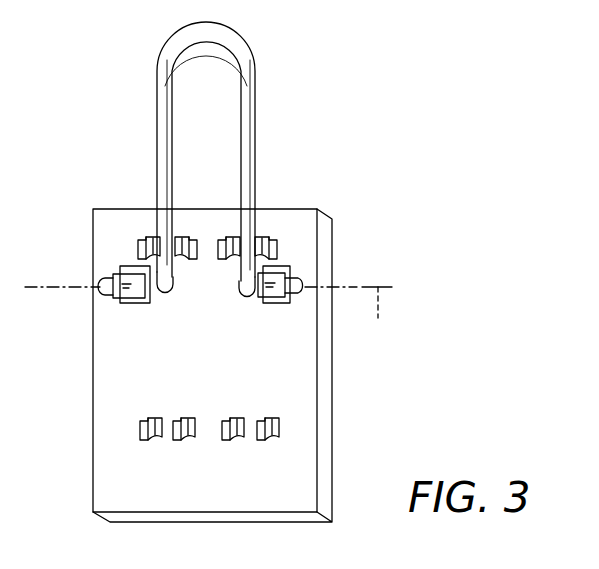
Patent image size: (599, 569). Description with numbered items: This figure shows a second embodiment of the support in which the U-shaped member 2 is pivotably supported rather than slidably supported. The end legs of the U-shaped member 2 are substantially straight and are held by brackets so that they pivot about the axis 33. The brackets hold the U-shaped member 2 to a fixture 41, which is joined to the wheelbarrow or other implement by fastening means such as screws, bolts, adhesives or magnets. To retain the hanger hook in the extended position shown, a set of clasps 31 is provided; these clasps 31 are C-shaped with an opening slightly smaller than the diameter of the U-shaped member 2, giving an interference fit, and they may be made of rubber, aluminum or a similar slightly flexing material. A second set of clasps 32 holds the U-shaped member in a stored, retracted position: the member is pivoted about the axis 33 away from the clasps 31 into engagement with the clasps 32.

The U-shaped member 2 is at (255, 140).
The clasps 31 is at (153, 238).
The second set of clasps 32 is at (140, 432).
The axis 33 is at (379, 314).
The fixture 41 is at (303, 410).